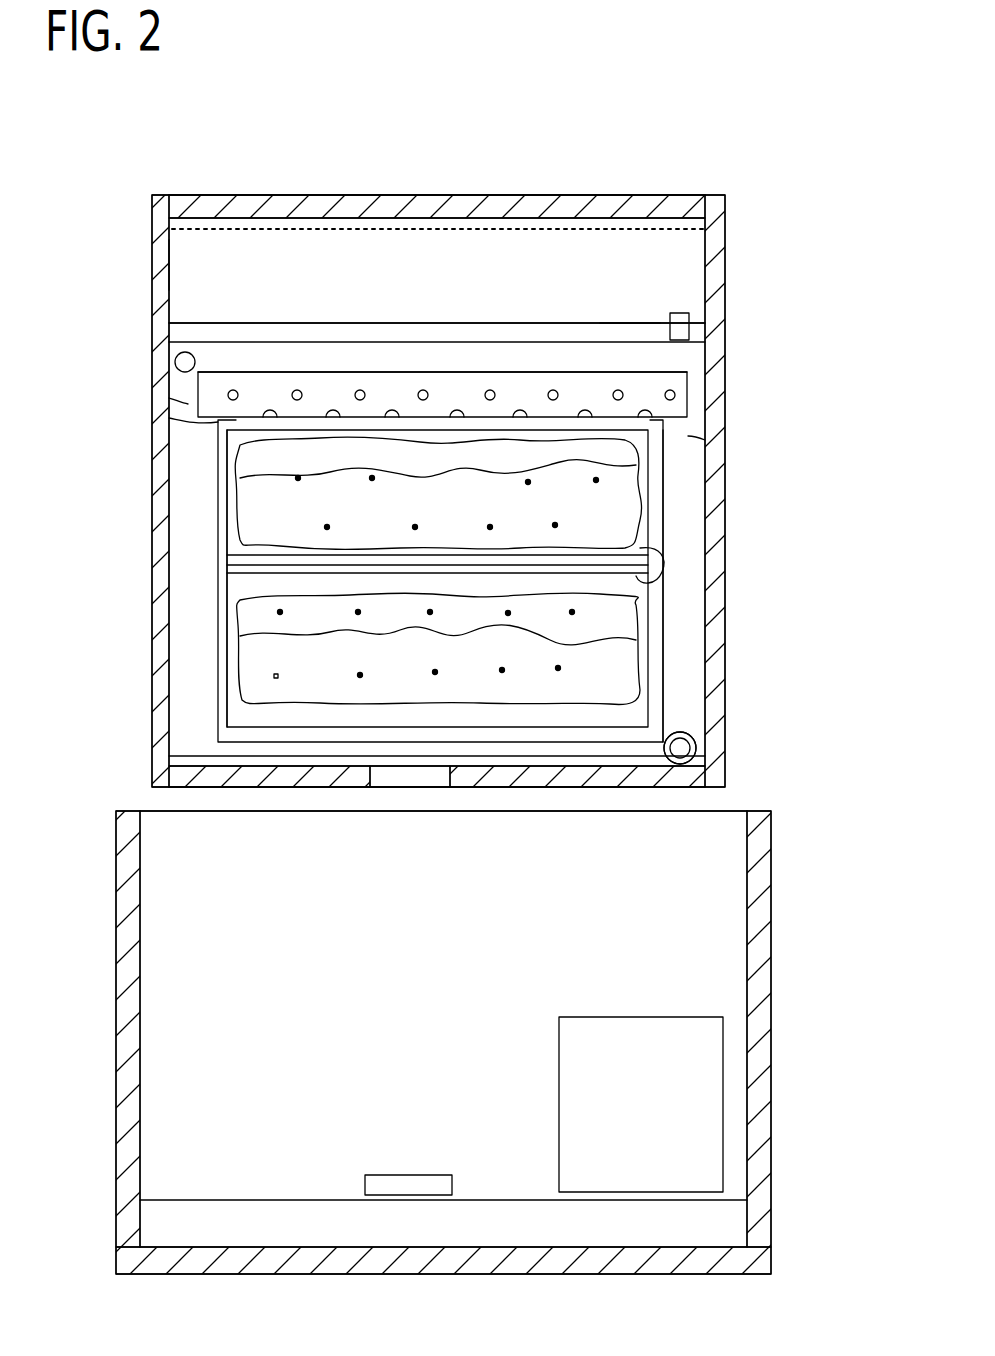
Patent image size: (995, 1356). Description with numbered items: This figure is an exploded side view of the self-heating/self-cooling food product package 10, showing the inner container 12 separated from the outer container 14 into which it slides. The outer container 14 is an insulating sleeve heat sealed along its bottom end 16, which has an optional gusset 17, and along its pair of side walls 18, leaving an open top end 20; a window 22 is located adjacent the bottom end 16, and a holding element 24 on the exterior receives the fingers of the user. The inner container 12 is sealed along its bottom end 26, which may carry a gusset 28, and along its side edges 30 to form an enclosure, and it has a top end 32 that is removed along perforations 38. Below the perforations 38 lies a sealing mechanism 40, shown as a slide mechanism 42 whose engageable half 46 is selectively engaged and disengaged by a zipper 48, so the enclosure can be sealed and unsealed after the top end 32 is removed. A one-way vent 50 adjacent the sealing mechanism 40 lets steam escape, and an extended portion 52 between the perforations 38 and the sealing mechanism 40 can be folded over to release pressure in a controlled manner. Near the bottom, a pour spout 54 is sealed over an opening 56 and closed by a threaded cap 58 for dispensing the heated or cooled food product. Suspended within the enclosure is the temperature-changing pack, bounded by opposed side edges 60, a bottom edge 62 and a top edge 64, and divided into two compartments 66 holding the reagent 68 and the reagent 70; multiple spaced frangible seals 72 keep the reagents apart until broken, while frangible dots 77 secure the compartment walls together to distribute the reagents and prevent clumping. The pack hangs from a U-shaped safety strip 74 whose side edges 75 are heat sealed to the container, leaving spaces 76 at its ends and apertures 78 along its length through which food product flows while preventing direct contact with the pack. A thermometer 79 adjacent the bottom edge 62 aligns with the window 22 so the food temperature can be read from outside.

The self-heating/self-cooling food product package 10 is at (796, 160).
The inner container 12 is at (766, 562).
The outer container 14 is at (812, 948).
The bottom end 16 is at (650, 1270).
The gusset 17 is at (752, 1200).
The side walls 18 is at (758, 880).
The open top end 20 is at (692, 812).
The window 22 is at (420, 1180).
The holding element 24 is at (668, 1040).
The bottom end 26 is at (205, 778).
The gusset 28 is at (186, 757).
The side edges 30 is at (154, 448).
The top end 32 is at (238, 195).
The perforations 38 is at (320, 229).
The sealing mechanism 40 is at (186, 310).
The slide mechanism 42 is at (610, 310).
The engageable half 46 is at (474, 332).
The zipper 48 is at (685, 312).
The vent 50 is at (196, 362).
The extended portion 52 is at (166, 268).
The pour spout 54 is at (690, 744).
The opening 56 is at (692, 760).
The cap 58 is at (690, 735).
The side edges 60 is at (218, 486).
The bottom edge 62 is at (577, 735).
The top edge 64 is at (200, 428).
The compartments 66 is at (663, 508).
The reagent 68 is at (274, 632).
The reagent 70 is at (245, 524).
The frangible seals 72 is at (660, 560).
The safety strip 74 is at (696, 390).
The side edges 75 is at (386, 372).
The spaces 76 is at (178, 398).
The frangible dots 77 is at (490, 527).
The apertures 78 is at (238, 395).
The thermometer 79 is at (400, 776).